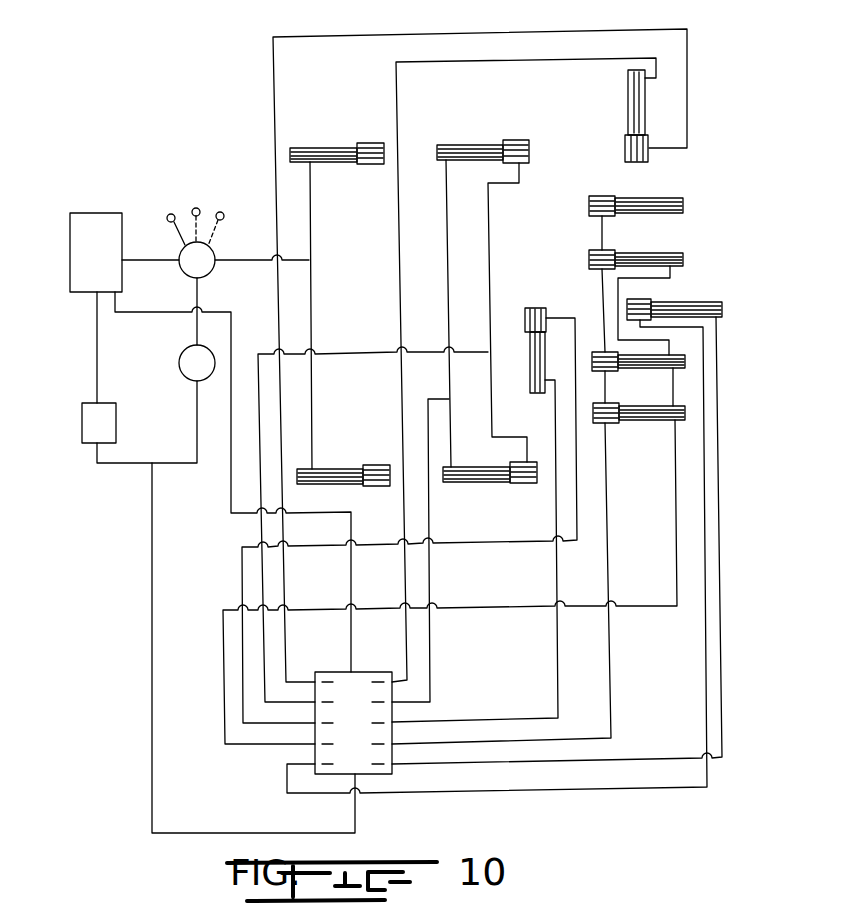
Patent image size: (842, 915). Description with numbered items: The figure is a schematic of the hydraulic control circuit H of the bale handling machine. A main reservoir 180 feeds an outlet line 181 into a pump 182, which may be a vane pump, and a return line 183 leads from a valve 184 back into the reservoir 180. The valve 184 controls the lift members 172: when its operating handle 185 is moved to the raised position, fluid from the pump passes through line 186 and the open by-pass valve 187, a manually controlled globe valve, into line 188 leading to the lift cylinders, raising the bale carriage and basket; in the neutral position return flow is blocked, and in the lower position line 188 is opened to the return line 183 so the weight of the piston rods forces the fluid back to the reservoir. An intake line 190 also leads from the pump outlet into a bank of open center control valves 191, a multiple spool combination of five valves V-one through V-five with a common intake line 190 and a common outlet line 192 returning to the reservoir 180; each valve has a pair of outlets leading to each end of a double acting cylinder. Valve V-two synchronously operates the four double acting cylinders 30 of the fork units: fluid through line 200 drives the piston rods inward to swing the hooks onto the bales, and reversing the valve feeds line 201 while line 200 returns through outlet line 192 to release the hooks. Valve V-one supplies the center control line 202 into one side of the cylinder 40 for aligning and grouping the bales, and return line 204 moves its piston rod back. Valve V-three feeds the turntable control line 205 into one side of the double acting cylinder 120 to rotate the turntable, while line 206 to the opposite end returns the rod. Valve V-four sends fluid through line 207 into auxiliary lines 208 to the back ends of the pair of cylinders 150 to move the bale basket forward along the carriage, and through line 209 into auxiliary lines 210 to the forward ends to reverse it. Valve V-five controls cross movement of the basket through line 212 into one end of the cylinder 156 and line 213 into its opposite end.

The hydraulic control circuit H is at (212, 112).
The double acting cylinders 30 is at (669, 197).
The cylinder 40 is at (705, 300).
The double acting cylinder 120 is at (533, 308).
The cylinders 150 is at (477, 145).
The cylinder 156 is at (628, 83).
The lift members 172 is at (329, 147).
The main reservoir 180 is at (97, 213).
The outlet line 181 is at (97, 343).
The pump 182 is at (82, 428).
The return line 183 is at (146, 263).
The valve 184 is at (221, 246).
The operating handle 185 is at (171, 214).
The line 186 is at (197, 408).
The by-pass valve 187 is at (179, 363).
The line 188 is at (230, 263).
The intake line 190 is at (152, 557).
The bank of open center control valves 191 is at (383, 775).
The outlet line 192 is at (231, 490).
The line 200 is at (613, 697).
The line 201 is at (501, 608).
The center control line 202 is at (720, 493).
The return line 204 is at (709, 788).
The turntable control line 205 is at (559, 690).
The line 206 is at (559, 316).
The line 207 is at (437, 654).
The auxiliary lines 208 is at (446, 213).
The line 209 is at (345, 353).
The auxiliary lines 210 is at (489, 218).
The line 212 is at (550, 58).
The line 213 is at (462, 35).